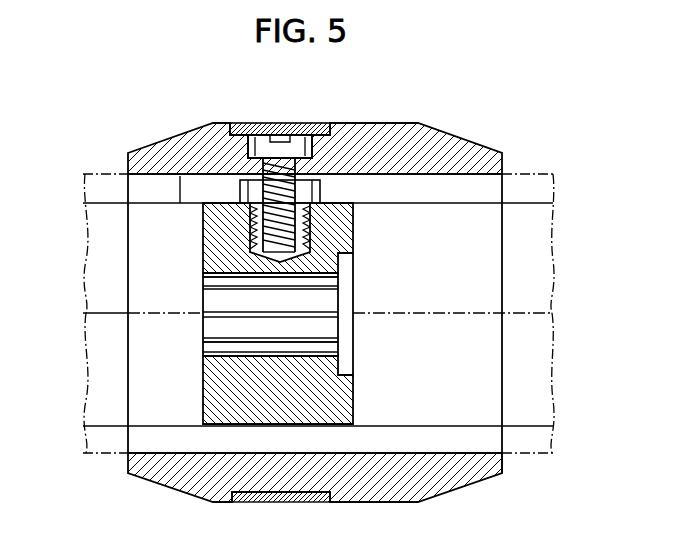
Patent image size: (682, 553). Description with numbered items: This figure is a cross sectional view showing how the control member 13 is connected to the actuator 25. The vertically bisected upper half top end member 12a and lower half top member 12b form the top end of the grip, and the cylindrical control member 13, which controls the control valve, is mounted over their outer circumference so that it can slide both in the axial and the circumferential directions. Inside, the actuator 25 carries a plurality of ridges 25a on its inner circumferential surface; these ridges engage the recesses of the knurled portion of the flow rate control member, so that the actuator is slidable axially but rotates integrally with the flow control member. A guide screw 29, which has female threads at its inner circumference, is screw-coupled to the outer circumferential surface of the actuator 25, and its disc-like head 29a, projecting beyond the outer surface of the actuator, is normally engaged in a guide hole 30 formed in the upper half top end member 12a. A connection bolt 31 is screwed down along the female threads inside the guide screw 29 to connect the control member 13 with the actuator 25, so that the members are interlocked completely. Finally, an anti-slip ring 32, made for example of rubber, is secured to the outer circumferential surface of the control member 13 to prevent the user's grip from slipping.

The upper half top end member 12a is at (537, 216).
The lower half top member 12b is at (535, 393).
The control member 13 is at (463, 108).
The actuator 25 is at (340, 396).
The ridges 25a is at (203, 347).
The guide screw 29 is at (312, 238).
The disc-like head 29a is at (307, 192).
The guide hole 30 is at (180, 200).
The connection bolt 31 is at (300, 128).
The anti-slip ring 32 is at (246, 128).